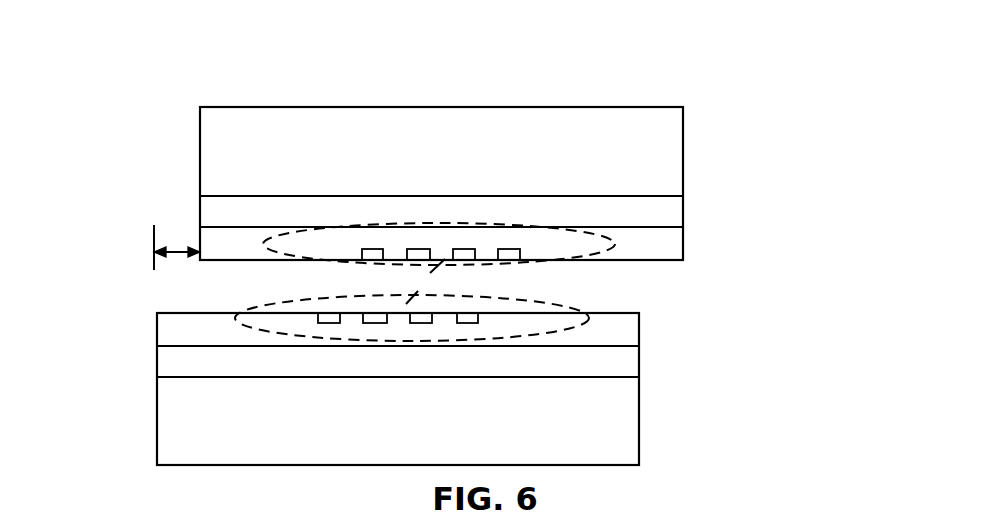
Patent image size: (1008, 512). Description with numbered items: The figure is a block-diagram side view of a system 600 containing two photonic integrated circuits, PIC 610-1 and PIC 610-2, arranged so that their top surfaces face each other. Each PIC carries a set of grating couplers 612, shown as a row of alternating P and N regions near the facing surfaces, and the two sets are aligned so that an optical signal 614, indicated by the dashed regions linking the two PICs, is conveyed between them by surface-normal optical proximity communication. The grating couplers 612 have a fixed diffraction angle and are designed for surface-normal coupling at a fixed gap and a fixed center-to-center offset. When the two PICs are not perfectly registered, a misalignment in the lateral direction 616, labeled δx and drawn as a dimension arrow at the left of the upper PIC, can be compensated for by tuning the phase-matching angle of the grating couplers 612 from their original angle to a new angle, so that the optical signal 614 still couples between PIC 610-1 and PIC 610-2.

The system 600 is at (756, 41).
The PIC 610-1 is at (127, 258).
The PIC 610-2 is at (127, 465).
The grating couplers 612 is at (324, 262).
The optical signal 614 is at (423, 282).
The misalignment in the lateral direction 616 is at (178, 248).